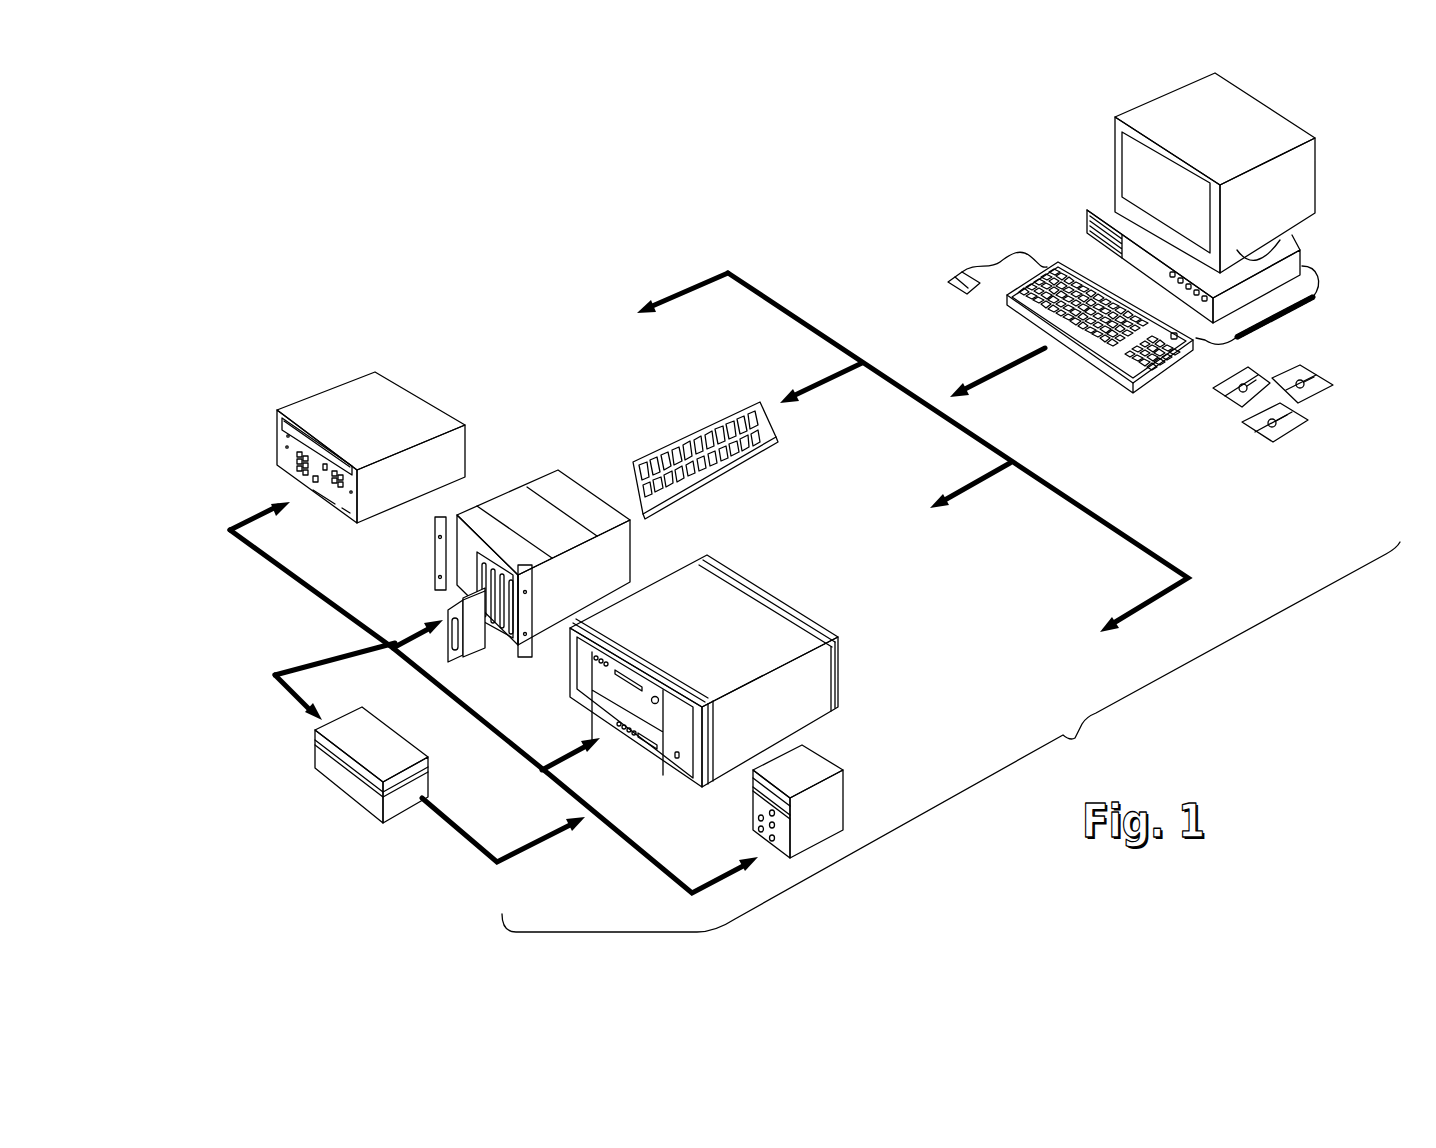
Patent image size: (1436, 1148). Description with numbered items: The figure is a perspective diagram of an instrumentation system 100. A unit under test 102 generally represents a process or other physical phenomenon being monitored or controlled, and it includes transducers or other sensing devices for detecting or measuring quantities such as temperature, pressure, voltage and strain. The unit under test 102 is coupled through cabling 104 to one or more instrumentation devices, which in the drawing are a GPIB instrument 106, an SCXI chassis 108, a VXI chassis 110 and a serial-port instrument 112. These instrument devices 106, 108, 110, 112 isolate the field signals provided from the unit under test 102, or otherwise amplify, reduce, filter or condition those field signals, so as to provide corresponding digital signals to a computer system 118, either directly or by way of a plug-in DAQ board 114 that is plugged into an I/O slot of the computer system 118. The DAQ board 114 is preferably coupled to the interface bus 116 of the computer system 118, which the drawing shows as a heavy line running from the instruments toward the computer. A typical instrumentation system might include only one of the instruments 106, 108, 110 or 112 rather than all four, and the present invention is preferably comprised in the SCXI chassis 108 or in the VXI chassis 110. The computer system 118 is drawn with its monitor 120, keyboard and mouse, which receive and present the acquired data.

The instrumentation system 100 is at (718, 200).
The unit under test 102 is at (388, 756).
The cabling 104 is at (305, 593).
The GPIB instrument 106 is at (382, 429).
The SCXI chassis 108 is at (551, 534).
The VXI chassis 110 is at (722, 642).
The RS 232 instrument 112 is at (842, 802).
The plug-in DAQ board 114 is at (707, 420).
The interface bus 116 is at (800, 317).
The computer system 118 is at (1116, 257).
The monitor 120 is at (1231, 144).